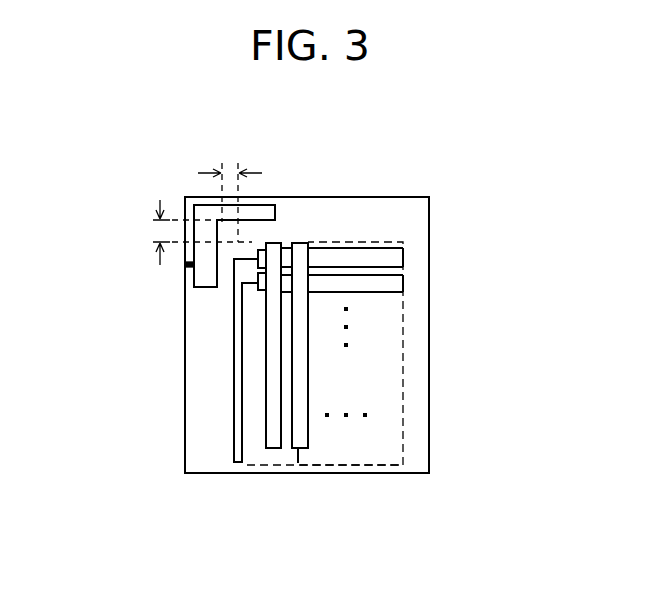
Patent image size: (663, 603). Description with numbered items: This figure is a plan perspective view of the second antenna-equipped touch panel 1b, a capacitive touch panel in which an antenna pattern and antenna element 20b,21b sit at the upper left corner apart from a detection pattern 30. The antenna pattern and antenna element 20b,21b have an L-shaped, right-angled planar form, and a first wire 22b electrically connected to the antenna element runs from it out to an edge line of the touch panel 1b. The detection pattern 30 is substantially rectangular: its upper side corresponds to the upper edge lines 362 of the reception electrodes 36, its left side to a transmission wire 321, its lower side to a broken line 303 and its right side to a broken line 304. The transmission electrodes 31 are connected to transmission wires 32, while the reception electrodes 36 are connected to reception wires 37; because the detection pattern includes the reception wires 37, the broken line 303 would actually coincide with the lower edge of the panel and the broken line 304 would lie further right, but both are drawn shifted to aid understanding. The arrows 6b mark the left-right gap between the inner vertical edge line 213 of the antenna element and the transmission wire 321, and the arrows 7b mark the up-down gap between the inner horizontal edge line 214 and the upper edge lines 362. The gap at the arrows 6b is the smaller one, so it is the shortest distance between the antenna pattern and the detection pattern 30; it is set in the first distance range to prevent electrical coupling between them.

The second antenna-equipped touch panel 1b is at (395, 177).
The arrows 6b is at (232, 172).
The arrows 7b is at (160, 228).
The inner horizontal edge line 214 is at (257, 214).
The inner vertical edge line 213 is at (220, 263).
The antenna pattern and antenna element 20b,21b is at (203, 288).
The first wire 22b is at (197, 264).
The broken line 304 is at (405, 360).
The broken line 303 is at (378, 468).
The transmission wires 32 is at (235, 447).
The transmission wire 321 is at (233, 409).
The transmission electrodes 31 is at (363, 260).
The reception wires 37 is at (273, 449).
The reception electrodes 36 is at (306, 432).
The upper edge lines 362 is at (298, 243).
The detection pattern 30 is at (387, 433).